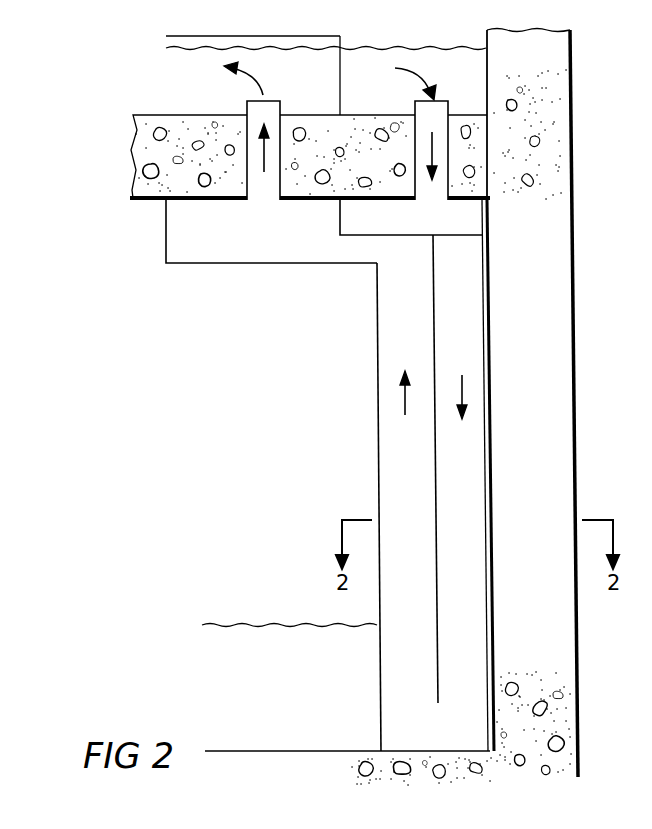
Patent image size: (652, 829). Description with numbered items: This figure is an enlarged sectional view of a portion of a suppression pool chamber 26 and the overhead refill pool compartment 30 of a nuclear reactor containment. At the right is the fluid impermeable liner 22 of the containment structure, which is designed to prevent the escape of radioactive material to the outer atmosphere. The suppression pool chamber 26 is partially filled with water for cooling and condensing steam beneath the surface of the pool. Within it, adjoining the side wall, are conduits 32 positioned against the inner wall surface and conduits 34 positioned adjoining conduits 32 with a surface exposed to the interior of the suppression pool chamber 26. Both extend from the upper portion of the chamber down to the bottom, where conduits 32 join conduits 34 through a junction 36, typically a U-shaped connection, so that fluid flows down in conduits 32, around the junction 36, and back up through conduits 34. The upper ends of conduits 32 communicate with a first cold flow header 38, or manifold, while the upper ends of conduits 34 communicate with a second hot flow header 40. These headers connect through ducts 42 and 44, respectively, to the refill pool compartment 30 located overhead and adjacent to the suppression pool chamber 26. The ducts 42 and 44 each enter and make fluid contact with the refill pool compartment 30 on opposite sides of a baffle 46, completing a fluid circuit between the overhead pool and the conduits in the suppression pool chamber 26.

The fluid impermeable liner 22 is at (492, 330).
The suppression pool chamber 26 is at (219, 462).
The refill pool compartment 30 is at (366, 50).
The conduits 32 is at (452, 490).
The conduits 34 is at (405, 445).
The junction 36 is at (422, 733).
The first cold flow header 38 is at (348, 237).
The second hot flow header 40 is at (183, 266).
The duct 42 is at (440, 112).
The duct 44 is at (266, 197).
The baffle 46 is at (190, 36).